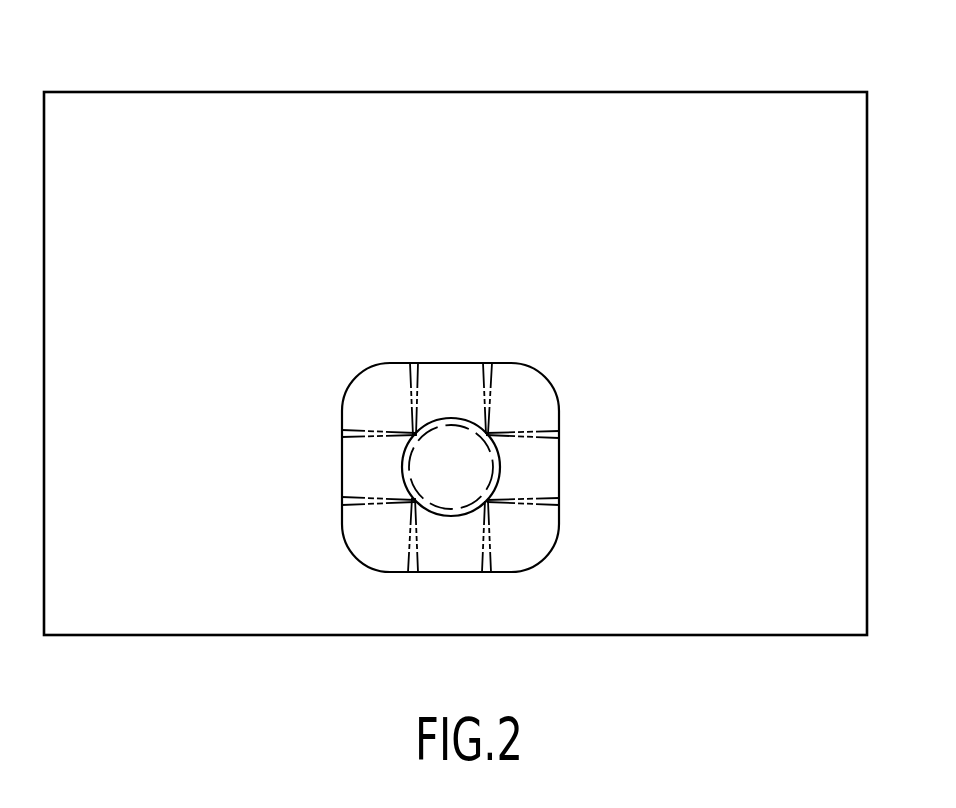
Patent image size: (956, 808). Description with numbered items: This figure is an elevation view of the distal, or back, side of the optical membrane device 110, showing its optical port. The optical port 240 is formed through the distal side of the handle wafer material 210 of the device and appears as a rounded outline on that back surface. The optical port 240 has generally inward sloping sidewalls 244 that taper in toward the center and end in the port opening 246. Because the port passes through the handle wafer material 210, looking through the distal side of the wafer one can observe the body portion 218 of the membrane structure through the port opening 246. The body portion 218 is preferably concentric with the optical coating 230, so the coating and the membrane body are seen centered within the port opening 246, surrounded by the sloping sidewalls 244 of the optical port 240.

The optical membrane device 110 is at (578, 92).
The handle wafer material 210 is at (686, 218).
The body portion 218 is at (471, 480).
The optical coating 230 is at (472, 431).
The optical port 240 is at (427, 369).
The inward sloping sidewalls 244 is at (541, 413).
The port opening 246 is at (494, 471).